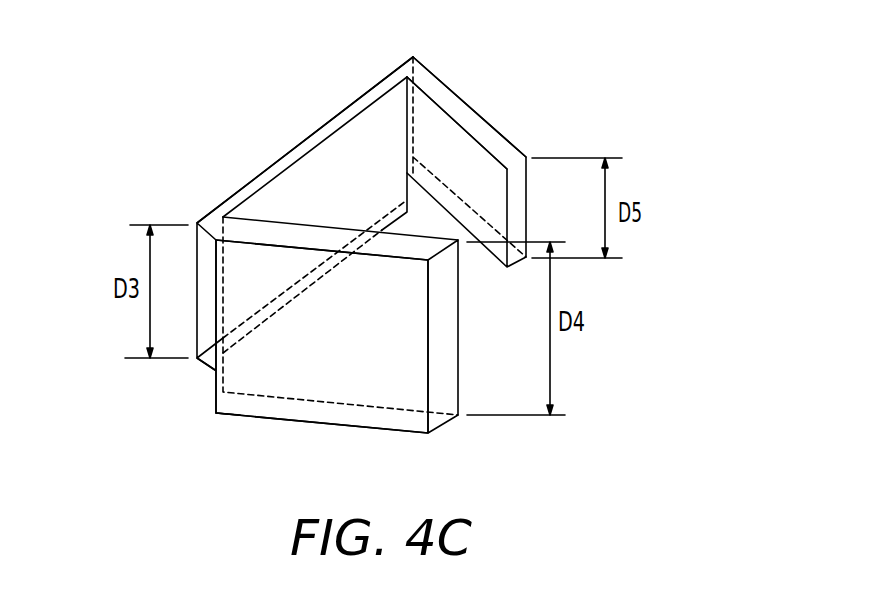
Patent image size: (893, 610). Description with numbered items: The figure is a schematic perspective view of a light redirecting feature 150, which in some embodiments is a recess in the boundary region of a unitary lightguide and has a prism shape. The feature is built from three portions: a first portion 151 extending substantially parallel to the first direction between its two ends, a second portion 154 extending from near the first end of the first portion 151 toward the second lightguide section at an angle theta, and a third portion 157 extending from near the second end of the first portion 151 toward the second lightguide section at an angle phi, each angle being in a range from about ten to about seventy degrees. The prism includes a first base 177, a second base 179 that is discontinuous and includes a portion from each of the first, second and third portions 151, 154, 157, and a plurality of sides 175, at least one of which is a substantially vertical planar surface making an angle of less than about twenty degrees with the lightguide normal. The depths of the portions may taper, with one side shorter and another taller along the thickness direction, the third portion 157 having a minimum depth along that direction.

The light redirecting feature 150 is at (143, 115).
The first portion 151 is at (312, 138).
The second portion 154 is at (300, 408).
The third portion 157 is at (440, 98).
The sides 175 is at (260, 175).
The first base 177 is at (362, 102).
The second base 179 is at (205, 360).